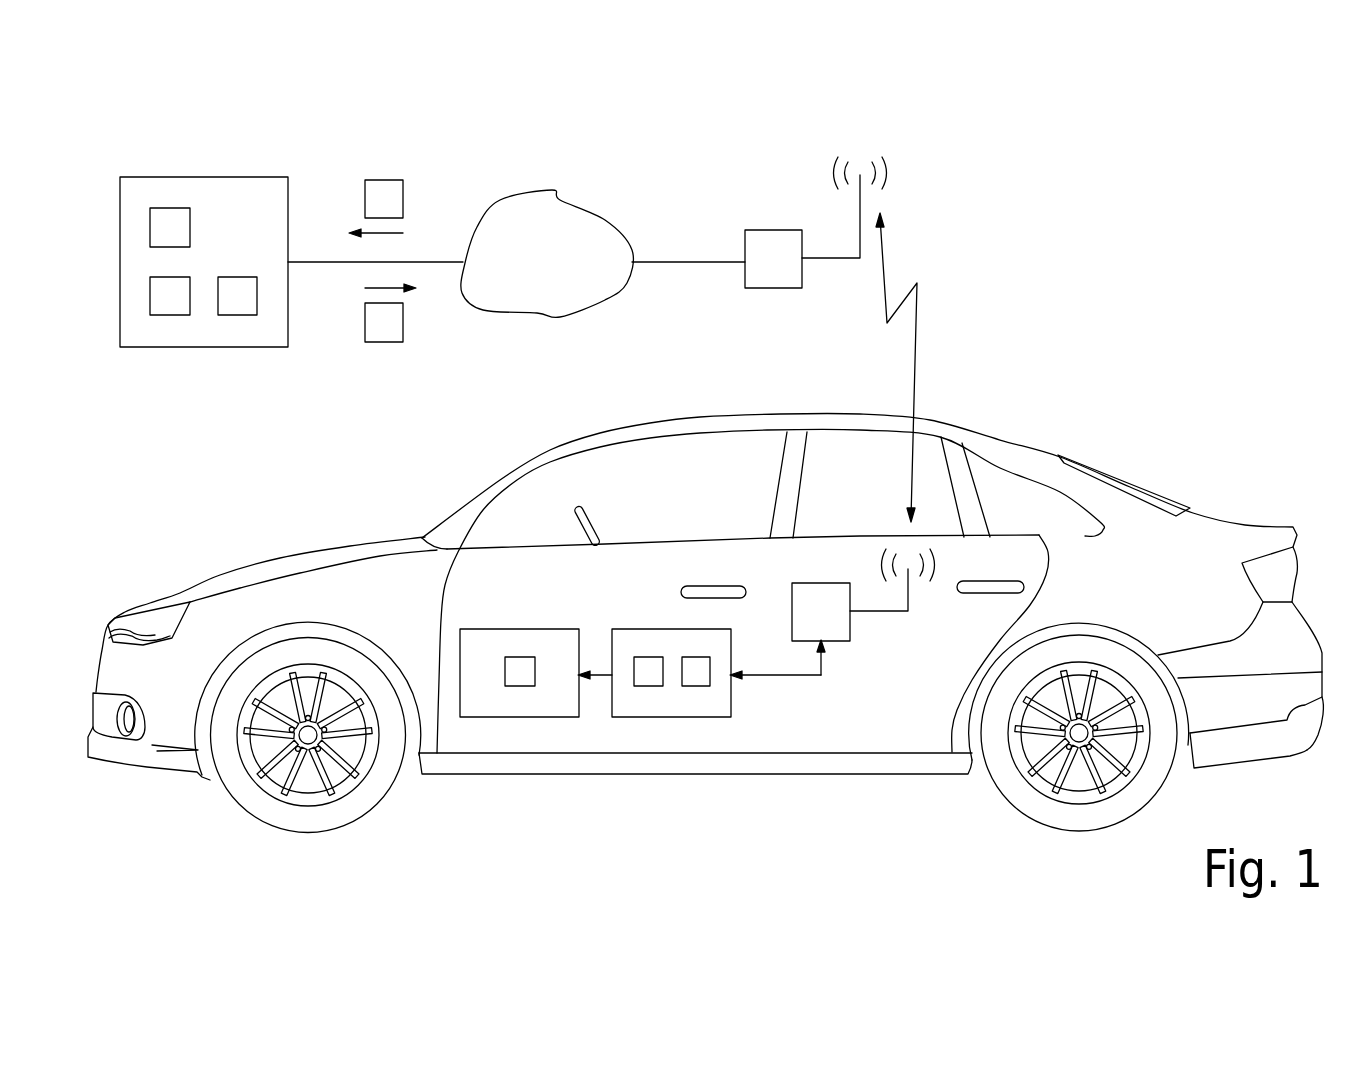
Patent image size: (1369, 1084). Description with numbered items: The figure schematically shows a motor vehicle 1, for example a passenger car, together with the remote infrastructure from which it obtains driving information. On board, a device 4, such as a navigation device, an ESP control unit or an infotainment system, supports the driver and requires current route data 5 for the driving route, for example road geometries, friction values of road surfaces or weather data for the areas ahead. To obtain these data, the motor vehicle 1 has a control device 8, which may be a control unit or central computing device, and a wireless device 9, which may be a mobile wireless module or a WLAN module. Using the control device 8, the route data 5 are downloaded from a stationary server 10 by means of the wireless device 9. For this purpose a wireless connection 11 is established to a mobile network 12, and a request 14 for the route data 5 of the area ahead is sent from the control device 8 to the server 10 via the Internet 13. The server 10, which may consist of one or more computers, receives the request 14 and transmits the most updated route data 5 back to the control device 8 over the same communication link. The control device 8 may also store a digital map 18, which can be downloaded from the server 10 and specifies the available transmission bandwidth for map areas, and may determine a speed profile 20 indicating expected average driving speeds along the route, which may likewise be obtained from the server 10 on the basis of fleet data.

The motor vehicle 1 is at (1008, 452).
The device 4 is at (555, 695).
The route data 5 is at (171, 308).
The control device 8 is at (712, 695).
The wireless device 9 is at (836, 634).
The server 10 is at (262, 188).
The wireless connection 11 is at (917, 332).
The mobile network 12 is at (775, 278).
The Internet 13 is at (548, 307).
The request 14 is at (383, 188).
The digital map 18 is at (170, 215).
The speed profile 20 is at (237, 308).